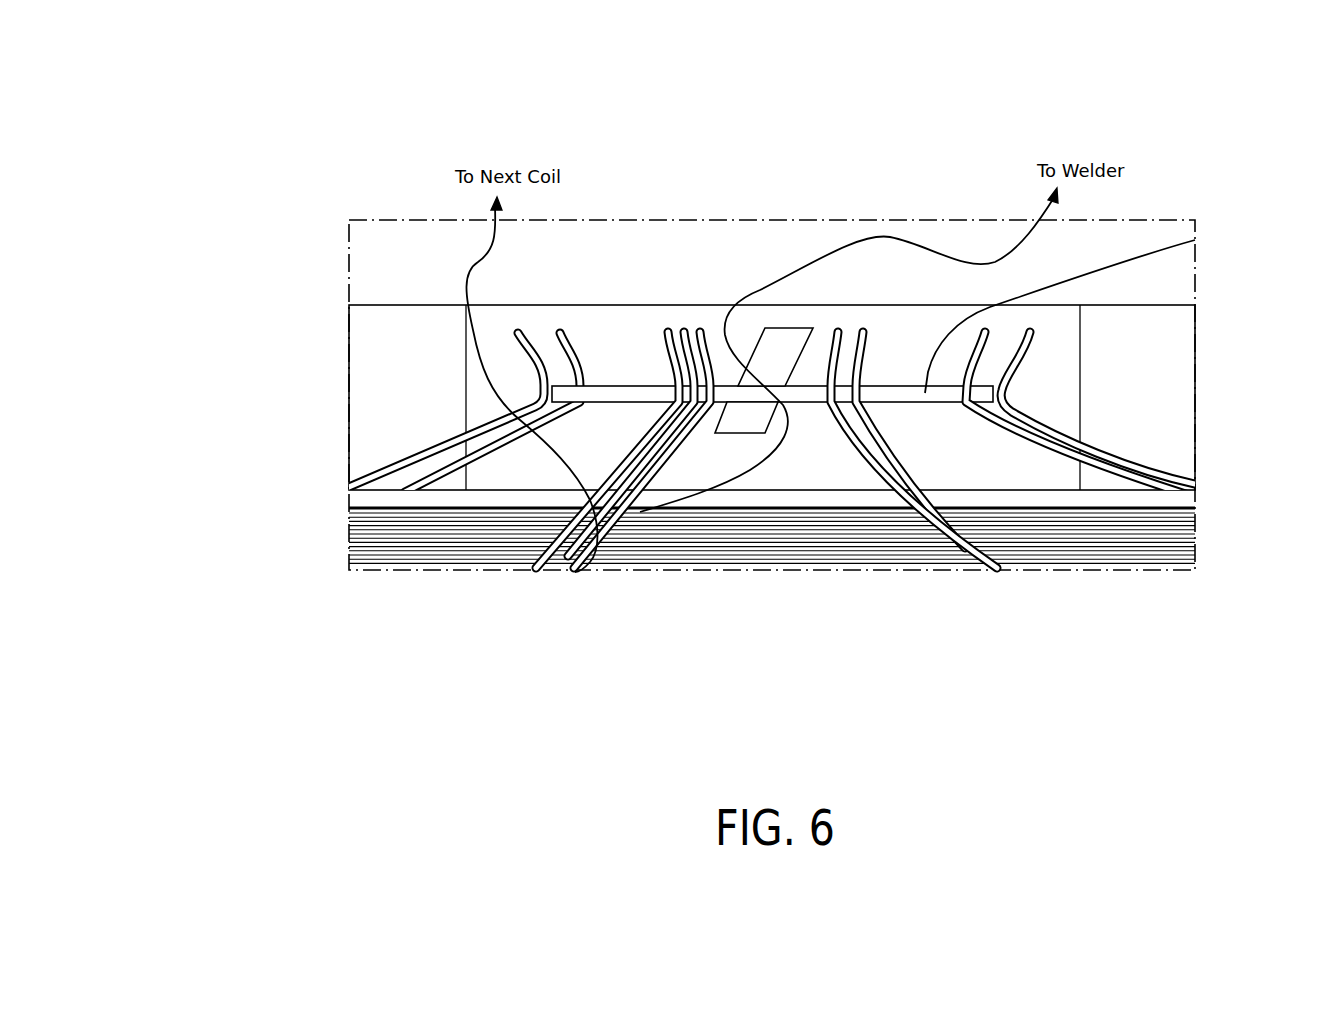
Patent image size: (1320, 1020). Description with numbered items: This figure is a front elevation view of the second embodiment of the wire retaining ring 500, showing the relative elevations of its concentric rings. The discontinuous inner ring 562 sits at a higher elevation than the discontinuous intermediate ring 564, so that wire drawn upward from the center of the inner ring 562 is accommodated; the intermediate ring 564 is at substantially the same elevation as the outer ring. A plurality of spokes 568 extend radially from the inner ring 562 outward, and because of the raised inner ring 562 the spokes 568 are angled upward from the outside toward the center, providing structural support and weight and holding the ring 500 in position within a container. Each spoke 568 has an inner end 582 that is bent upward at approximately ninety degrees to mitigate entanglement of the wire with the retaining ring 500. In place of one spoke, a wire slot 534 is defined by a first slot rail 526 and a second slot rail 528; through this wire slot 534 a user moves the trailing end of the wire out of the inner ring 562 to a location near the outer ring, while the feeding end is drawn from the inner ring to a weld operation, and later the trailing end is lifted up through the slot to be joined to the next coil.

The wire retaining ring 500 is at (310, 158).
The inner end 582 is at (521, 335).
The inner ring 562 is at (1195, 240).
The spokes 568 is at (1012, 436).
The intermediate ring 564 is at (1145, 500).
The first slot rail 526 is at (547, 560).
The wire slot 534 is at (557, 562).
The second slot rail 528 is at (572, 570).